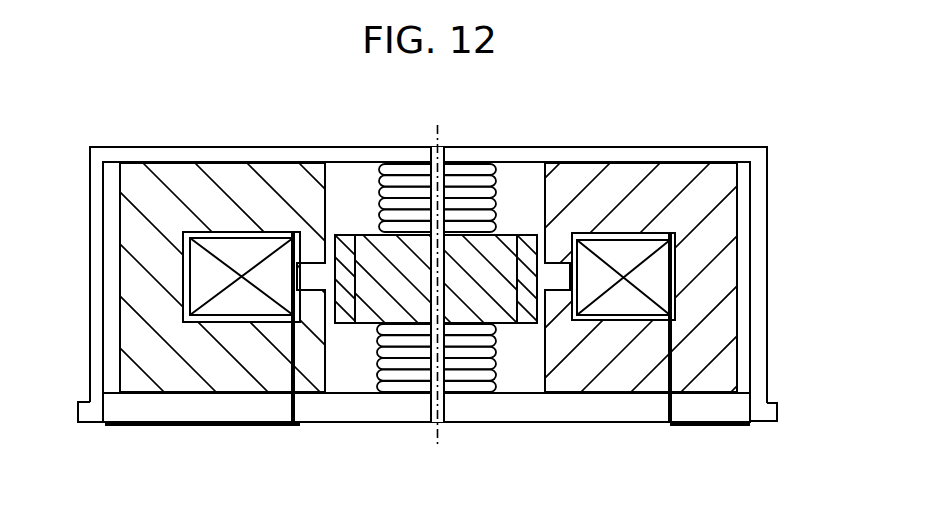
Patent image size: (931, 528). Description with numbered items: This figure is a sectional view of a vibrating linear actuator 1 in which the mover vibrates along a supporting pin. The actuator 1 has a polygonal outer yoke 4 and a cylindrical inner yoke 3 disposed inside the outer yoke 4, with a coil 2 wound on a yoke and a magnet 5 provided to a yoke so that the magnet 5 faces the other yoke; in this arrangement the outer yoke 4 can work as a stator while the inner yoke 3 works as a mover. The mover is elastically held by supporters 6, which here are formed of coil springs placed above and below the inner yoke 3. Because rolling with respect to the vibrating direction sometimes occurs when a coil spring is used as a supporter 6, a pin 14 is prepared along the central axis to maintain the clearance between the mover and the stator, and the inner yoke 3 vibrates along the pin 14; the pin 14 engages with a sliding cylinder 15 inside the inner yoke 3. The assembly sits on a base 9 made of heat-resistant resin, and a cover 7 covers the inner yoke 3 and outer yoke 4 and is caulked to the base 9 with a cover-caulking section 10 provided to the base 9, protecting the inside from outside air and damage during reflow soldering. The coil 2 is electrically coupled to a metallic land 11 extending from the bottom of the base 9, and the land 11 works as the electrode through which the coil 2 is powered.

The actuator 1 is at (562, 130).
The coil 2 is at (622, 260).
The inner yoke 3 is at (380, 260).
The outer yoke 4 is at (728, 228).
The magnet 5 is at (340, 245).
The supporter 6 is at (483, 393).
The cover 7 is at (217, 158).
The base 9 is at (603, 408).
The cover-caulking section 10 is at (780, 405).
The land 11 is at (153, 425).
The pin 14 is at (436, 150).
The sliding cylinder 15 is at (443, 240).